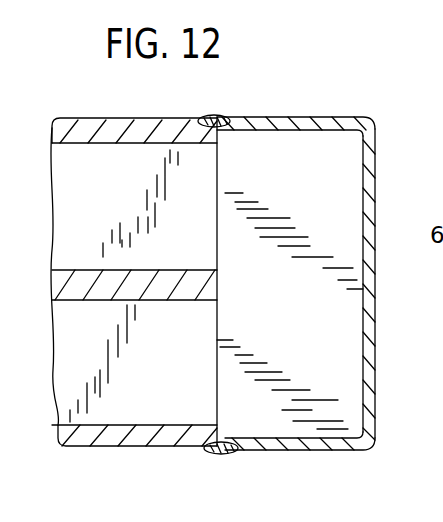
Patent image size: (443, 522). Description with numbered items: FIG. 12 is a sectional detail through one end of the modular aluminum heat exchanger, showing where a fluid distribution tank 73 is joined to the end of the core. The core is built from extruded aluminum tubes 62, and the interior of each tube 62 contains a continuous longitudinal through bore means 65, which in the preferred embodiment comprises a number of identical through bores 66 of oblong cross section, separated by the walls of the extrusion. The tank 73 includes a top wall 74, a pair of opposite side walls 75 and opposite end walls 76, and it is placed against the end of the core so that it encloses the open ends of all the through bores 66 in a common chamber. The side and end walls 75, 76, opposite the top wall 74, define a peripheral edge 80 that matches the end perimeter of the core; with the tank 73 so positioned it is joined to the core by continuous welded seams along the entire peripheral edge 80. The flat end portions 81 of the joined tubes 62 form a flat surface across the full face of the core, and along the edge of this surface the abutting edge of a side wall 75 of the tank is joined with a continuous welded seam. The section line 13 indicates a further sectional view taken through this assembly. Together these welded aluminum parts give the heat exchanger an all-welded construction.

The section line 13- 13 is at (103, 364).
The tube 62 is at (168, 450).
The through bore means 65 is at (84, 191).
The through bores 66 is at (150, 140).
The fluid distribution tank 73 is at (337, 119).
The top wall 74 is at (377, 310).
The side walls 75 is at (280, 450).
The end walls 76 is at (299, 339).
The peripheral edge 80 is at (217, 177).
The flat end portions 81 is at (218, 290).